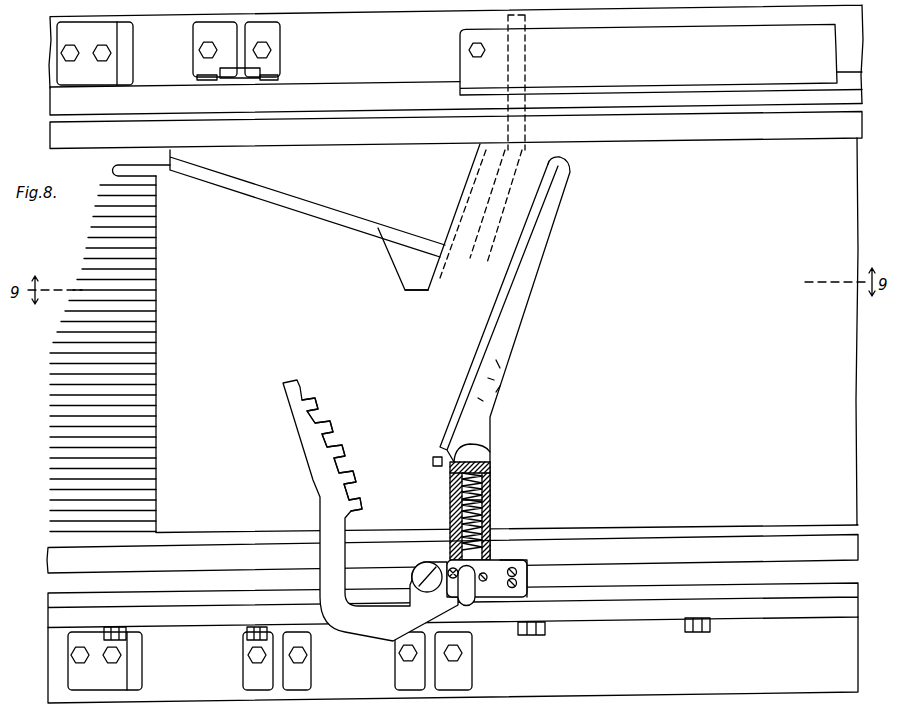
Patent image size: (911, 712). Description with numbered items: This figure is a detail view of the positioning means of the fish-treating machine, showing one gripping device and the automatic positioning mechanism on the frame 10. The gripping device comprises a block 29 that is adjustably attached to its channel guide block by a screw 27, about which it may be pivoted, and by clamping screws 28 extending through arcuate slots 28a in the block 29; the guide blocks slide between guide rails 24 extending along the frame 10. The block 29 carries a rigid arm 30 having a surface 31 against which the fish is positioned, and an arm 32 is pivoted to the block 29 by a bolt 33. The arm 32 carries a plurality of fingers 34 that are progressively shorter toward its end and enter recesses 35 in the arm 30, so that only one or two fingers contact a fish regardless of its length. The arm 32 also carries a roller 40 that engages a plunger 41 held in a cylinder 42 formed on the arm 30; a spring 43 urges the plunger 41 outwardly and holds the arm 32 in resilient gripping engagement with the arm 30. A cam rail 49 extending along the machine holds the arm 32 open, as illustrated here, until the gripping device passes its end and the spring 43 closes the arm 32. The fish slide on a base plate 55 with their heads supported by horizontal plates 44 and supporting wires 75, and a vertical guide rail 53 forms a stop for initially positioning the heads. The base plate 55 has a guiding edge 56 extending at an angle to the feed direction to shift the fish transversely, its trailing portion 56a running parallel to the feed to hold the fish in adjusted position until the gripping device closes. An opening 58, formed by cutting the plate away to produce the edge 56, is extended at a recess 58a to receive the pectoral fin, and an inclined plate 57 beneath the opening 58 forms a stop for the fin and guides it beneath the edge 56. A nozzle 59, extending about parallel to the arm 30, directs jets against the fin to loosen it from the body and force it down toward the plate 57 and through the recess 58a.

The frame 10 is at (862, 50).
The vertical guide rail 53 is at (661, 59).
The horizontal plates 44 is at (752, 132).
The base plate 55 is at (507, 335).
The supporting wires 75 is at (83, 268).
The trailing portion 56a is at (160, 163).
The inclined plate 57 is at (300, 206).
The guiding edge 56 is at (358, 233).
The recess 58a is at (418, 292).
The opening 58 is at (464, 197).
The nozzle 59 is at (482, 147).
The rigid arm 30 is at (530, 358).
The surface 31 is at (495, 315).
The recesses 35 is at (505, 368).
The spring 43 is at (497, 463).
The plunger 41 is at (492, 499).
The cylinder 42 is at (490, 479).
The guide rails 24 is at (718, 556).
The cam rail 49 is at (755, 616).
The arm 32 is at (370, 510).
The fingers 34 is at (337, 432).
The screw 27 is at (498, 565).
The roller 40 is at (478, 594).
The bolt 33 is at (415, 565).
The clamping screws 28 is at (452, 567).
The arcuate slots 28a is at (518, 568).
The block 29 is at (530, 565).